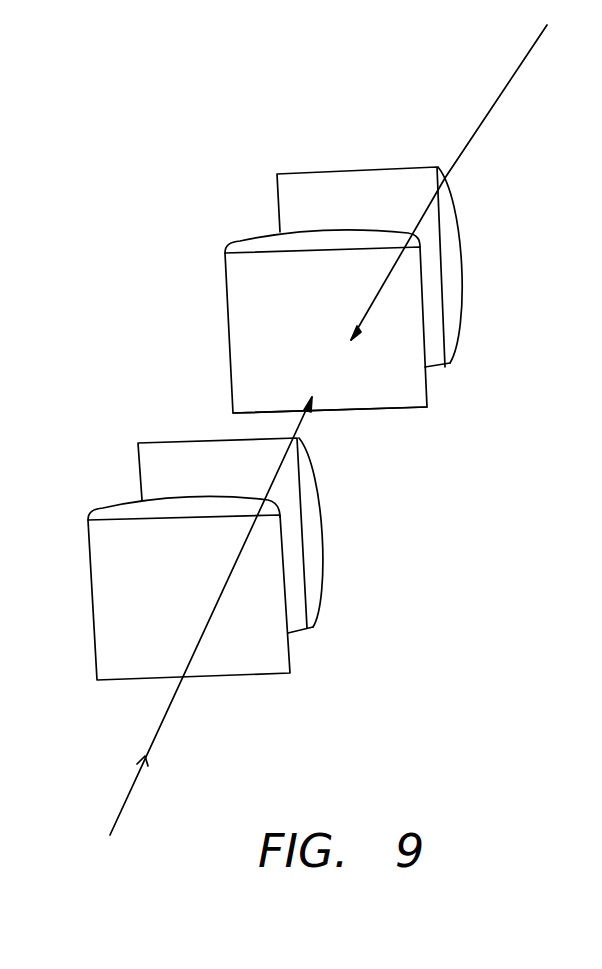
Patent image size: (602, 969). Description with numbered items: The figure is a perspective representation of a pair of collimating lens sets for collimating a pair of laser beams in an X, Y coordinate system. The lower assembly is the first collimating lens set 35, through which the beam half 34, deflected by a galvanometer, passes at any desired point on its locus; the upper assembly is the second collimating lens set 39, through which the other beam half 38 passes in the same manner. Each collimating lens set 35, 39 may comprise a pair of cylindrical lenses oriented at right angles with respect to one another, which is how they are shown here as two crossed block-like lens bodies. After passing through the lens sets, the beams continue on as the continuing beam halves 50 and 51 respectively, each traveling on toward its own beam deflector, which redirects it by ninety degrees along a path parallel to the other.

The beam half 34 is at (125, 807).
The first collimating lens set 35 is at (140, 402).
The beam half 38 is at (490, 108).
The second collimating lens set 39 is at (401, 332).
The continuing beam half 50 is at (298, 423).
The continuing beam half 51 is at (377, 293).